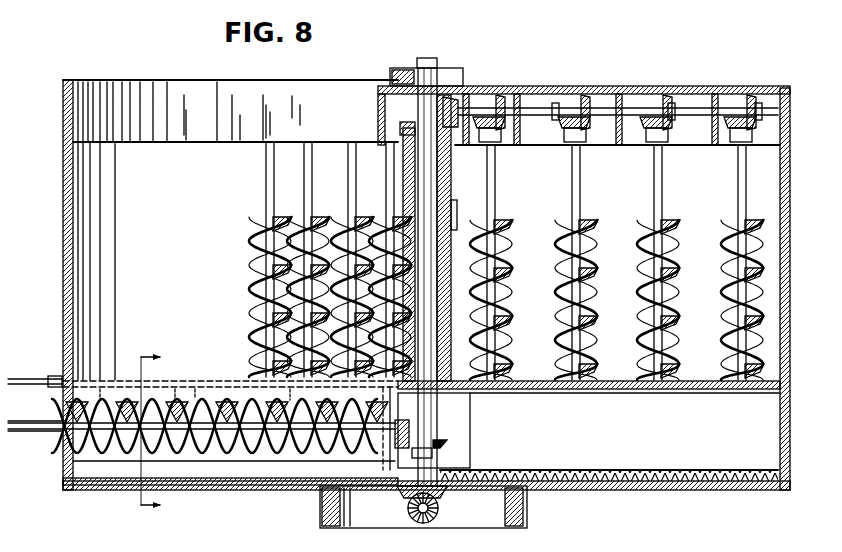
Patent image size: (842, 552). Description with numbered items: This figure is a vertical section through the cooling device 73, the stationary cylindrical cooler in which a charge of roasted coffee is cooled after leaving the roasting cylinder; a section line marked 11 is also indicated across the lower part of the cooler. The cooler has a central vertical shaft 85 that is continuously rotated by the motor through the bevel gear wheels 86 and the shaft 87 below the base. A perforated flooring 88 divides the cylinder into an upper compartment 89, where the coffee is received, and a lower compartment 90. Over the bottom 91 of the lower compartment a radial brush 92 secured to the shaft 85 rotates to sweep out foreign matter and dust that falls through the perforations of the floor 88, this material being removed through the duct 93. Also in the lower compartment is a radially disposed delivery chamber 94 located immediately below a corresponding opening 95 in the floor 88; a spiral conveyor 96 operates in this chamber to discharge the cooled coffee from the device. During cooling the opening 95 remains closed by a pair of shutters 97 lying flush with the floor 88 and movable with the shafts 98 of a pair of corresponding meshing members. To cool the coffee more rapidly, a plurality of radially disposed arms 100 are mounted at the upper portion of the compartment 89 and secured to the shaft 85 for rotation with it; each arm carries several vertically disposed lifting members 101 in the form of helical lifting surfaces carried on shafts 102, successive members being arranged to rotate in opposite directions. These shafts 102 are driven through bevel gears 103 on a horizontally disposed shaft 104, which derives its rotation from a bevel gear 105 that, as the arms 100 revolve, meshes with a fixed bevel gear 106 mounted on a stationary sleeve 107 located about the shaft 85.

The section line 11- 11 is at (140, 432).
The cooling device 73 is at (176, 78).
The central vertical shaft 85 is at (440, 262).
The bevel gear wheels 86 is at (446, 495).
The shaft 87 is at (412, 512).
The perforated flooring 88 is at (526, 381).
The upper compartment 89 is at (281, 259).
The lower compartment 90 is at (625, 419).
The bottom 91 is at (592, 472).
The radial brush 92 is at (665, 470).
The duct 93 is at (462, 426).
The delivery chamber 94 is at (233, 453).
The opening 95 is at (195, 382).
The spiral conveyor 96 is at (55, 440).
The shutters 97 is at (217, 398).
The shafts 98 is at (35, 367).
The radially disposed arms 100 is at (293, 100).
The lifting members 101 is at (560, 245).
The shafts 102 is at (586, 205).
The bevel gears 103 is at (574, 118).
The horizontally disposed shaft 104 is at (542, 105).
The bevel gear 105 is at (451, 100).
The fixed bevel gear 106 is at (399, 128).
The stationary sleeve 107 is at (454, 205).